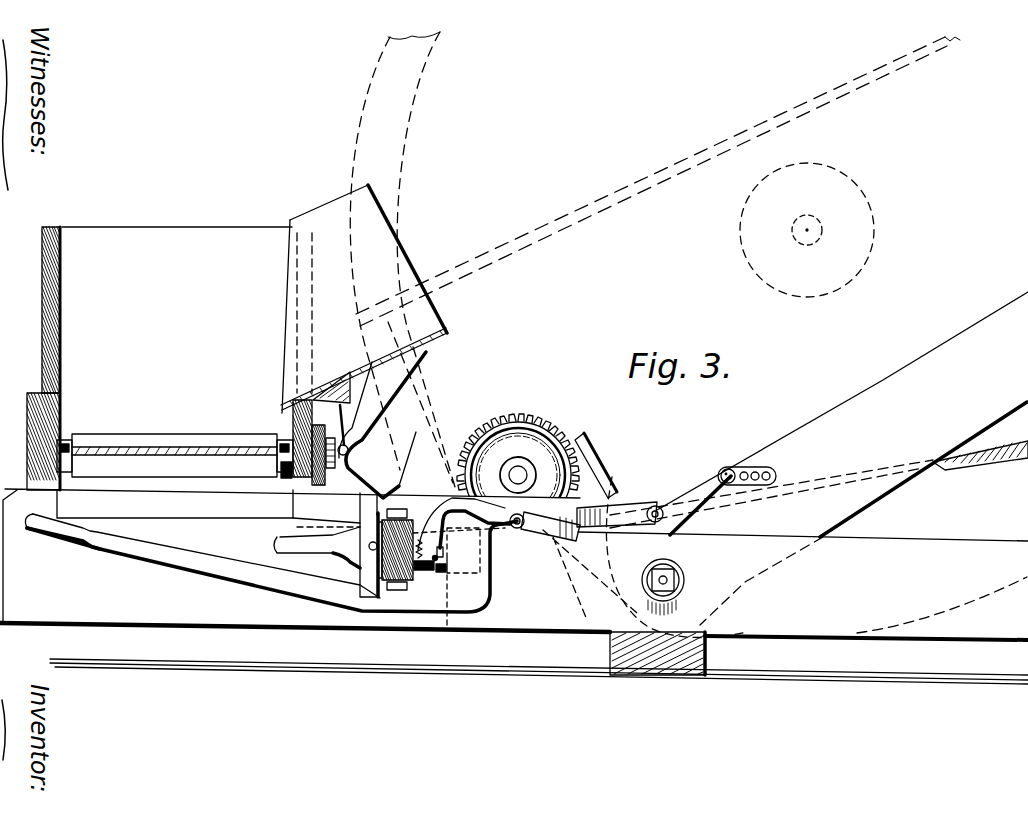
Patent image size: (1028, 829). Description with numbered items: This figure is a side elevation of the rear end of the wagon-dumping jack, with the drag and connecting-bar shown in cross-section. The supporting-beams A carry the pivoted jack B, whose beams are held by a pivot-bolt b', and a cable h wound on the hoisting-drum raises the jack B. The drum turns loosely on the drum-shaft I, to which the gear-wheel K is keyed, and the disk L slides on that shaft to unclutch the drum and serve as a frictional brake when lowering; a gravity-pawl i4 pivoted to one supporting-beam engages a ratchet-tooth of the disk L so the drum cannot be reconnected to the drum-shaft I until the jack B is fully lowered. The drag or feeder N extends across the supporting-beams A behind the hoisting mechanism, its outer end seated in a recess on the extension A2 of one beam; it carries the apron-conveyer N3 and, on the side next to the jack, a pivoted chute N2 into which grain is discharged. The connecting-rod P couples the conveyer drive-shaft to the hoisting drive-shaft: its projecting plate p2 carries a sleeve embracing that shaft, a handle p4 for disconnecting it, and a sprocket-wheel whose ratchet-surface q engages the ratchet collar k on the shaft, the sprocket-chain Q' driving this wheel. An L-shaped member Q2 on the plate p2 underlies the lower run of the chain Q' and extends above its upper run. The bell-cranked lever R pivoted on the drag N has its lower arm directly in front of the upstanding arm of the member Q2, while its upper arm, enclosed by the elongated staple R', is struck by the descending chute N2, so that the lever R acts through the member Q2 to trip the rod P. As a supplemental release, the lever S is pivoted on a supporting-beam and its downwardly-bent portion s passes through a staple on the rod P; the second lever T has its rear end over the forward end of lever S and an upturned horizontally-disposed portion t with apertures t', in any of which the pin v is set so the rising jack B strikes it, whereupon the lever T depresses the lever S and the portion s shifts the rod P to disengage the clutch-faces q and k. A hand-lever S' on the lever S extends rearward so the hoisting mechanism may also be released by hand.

The supporting-beams A is at (514, 586).
The drag or feeder N is at (42, 352).
The pivoted chute N2 is at (372, 372).
The apron-conveyer N3 is at (168, 446).
The bell-cranked lever R is at (382, 425).
The elongated staple R' is at (368, 431).
The disk L is at (512, 414).
The gear-wheel K is at (542, 420).
The drum-shaft I is at (519, 474).
The gravity-pawl i4 is at (600, 478).
The second lever T is at (620, 512).
The lever S is at (574, 513).
The hand-lever S' is at (425, 579).
The sprocket-chain Q' is at (272, 573).
The extension A2 is at (202, 556).
The L-shaped member Q2 is at (337, 535).
The ratchet-surface q is at (403, 554).
The collar k is at (445, 572).
The downwardly-bent portion s is at (429, 543).
The connecting-rod P is at (360, 572).
The handle p4 is at (329, 550).
The projecting plate p2 is at (373, 530).
The pivot-bolt b' is at (676, 557).
The horizontally-disposed portion t is at (755, 473).
The pin v is at (727, 468).
The apertures t' is at (755, 456).
The jack B is at (692, 335).
The cable h is at (985, 460).